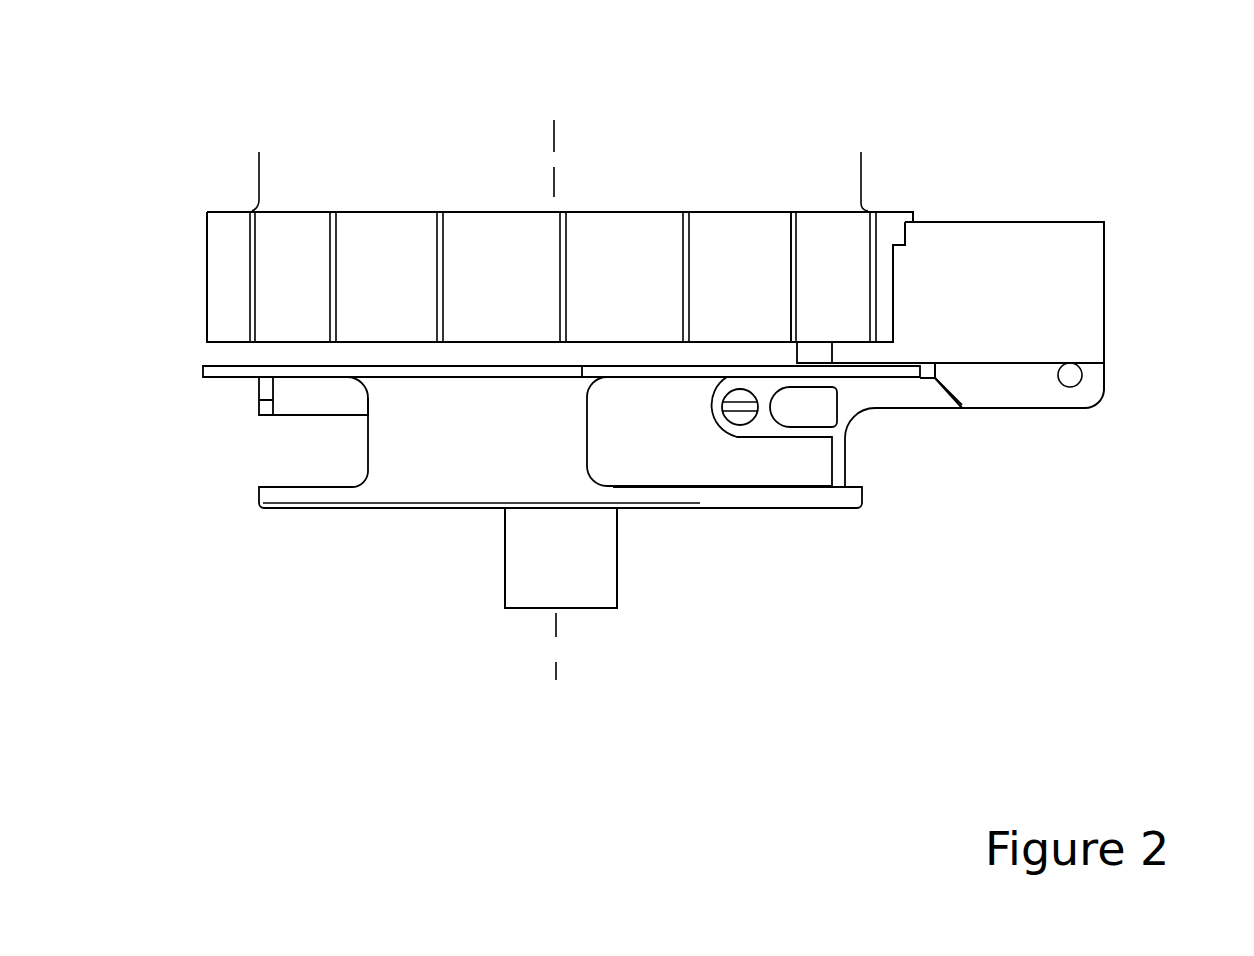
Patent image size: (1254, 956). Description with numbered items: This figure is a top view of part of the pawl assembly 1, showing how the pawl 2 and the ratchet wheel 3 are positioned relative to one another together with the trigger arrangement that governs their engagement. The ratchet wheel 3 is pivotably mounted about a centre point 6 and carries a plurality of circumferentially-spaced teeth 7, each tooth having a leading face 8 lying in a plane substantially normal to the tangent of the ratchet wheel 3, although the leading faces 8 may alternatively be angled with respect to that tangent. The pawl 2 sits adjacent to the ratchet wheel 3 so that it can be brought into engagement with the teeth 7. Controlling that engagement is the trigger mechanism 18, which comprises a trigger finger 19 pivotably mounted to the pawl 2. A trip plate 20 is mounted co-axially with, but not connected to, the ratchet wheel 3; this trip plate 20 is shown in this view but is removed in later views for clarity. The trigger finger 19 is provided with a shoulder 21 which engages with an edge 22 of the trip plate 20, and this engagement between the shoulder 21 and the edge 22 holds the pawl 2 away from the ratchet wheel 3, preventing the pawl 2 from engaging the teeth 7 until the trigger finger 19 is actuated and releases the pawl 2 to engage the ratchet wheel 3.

The pawl assembly 1 is at (1030, 105).
The pawl 2 is at (1068, 293).
The ratchet wheel 3 is at (647, 233).
The centre point 6 is at (553, 127).
The teeth 7 is at (746, 237).
The leading face 8 is at (797, 232).
The trigger mechanism 18 is at (1045, 468).
The trigger finger 19 is at (920, 395).
The trip plate 20 is at (437, 492).
The shoulder 21 is at (920, 378).
The edge 22 is at (200, 375).